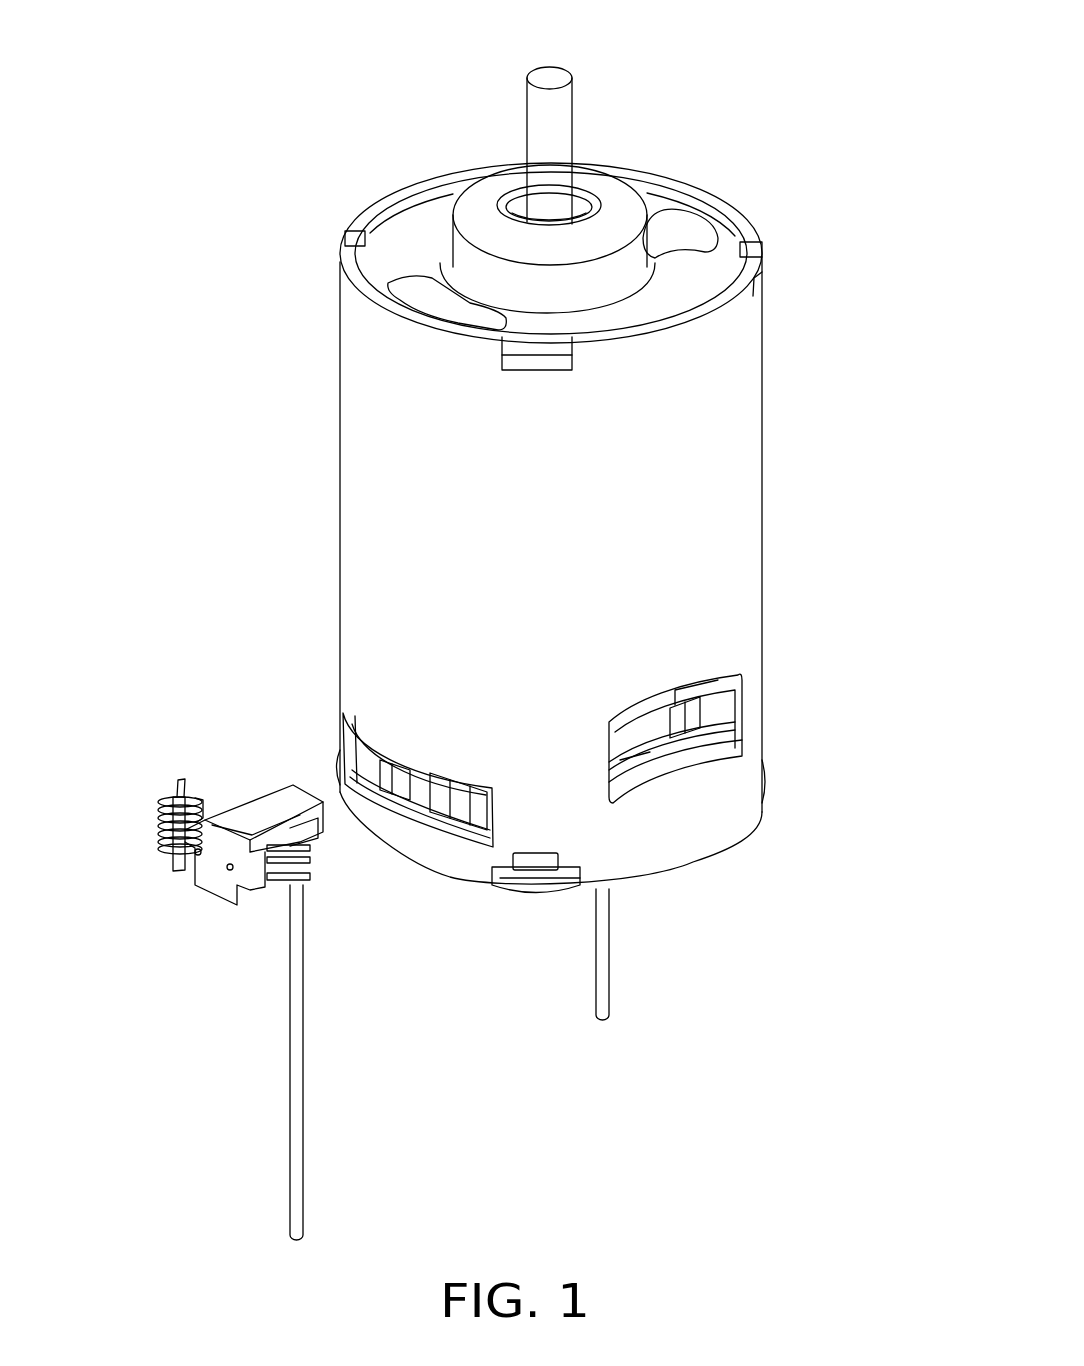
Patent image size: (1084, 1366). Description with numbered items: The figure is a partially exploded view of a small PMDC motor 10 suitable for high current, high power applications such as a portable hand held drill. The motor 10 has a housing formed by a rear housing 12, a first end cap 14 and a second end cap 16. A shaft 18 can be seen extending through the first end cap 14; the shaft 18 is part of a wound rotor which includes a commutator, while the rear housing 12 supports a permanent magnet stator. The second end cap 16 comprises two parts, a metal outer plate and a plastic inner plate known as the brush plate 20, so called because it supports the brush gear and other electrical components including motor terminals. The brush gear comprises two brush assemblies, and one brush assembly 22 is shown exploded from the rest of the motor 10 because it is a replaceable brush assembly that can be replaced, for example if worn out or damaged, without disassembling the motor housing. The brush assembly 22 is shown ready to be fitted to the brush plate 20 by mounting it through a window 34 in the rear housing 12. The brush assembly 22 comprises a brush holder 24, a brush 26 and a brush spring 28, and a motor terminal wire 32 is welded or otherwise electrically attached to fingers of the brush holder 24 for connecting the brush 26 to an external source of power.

The motor 10 is at (602, 537).
The rear housing 12 is at (760, 440).
The first end cap 14 is at (428, 232).
The second end cap 16 is at (544, 893).
The shaft 18 is at (574, 108).
The brush plate 20 is at (745, 712).
The brush assembly 22 is at (140, 762).
The brush holder 24 is at (205, 885).
The brush 26 is at (258, 803).
The brush spring 28 is at (152, 831).
The terminal wire 32 is at (290, 1092).
The window 34 is at (350, 743).